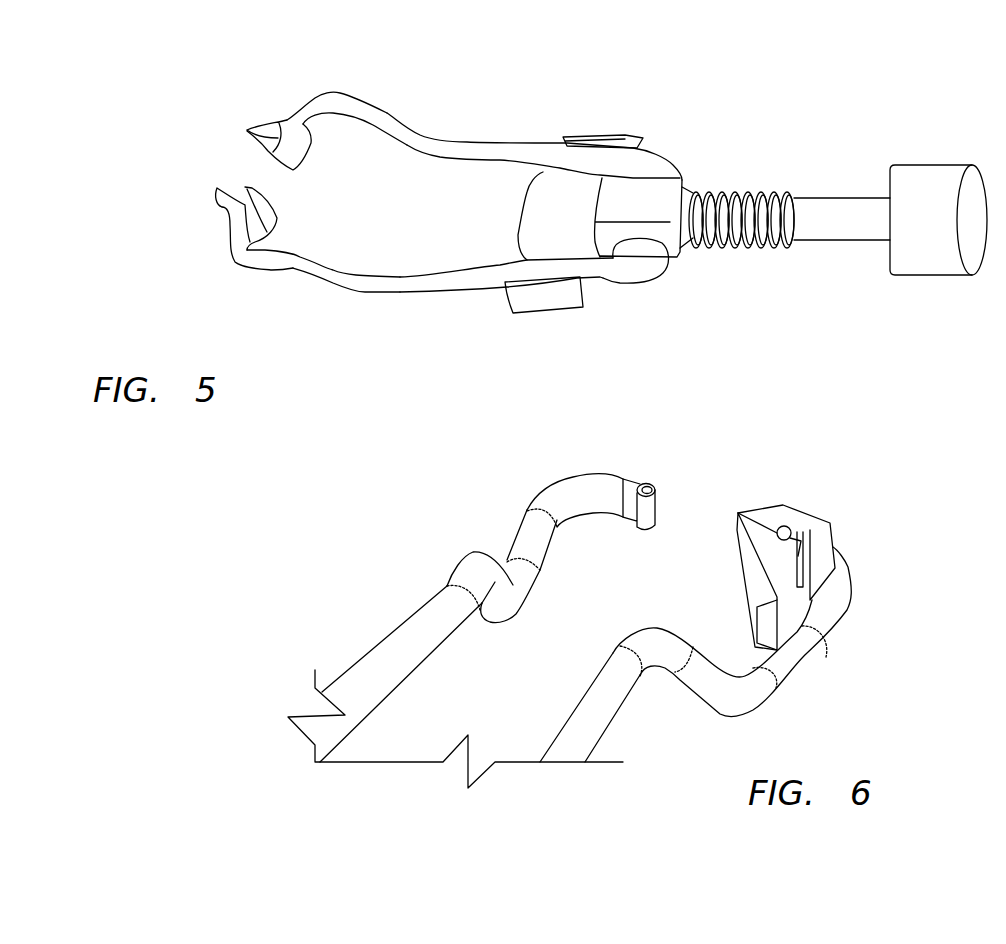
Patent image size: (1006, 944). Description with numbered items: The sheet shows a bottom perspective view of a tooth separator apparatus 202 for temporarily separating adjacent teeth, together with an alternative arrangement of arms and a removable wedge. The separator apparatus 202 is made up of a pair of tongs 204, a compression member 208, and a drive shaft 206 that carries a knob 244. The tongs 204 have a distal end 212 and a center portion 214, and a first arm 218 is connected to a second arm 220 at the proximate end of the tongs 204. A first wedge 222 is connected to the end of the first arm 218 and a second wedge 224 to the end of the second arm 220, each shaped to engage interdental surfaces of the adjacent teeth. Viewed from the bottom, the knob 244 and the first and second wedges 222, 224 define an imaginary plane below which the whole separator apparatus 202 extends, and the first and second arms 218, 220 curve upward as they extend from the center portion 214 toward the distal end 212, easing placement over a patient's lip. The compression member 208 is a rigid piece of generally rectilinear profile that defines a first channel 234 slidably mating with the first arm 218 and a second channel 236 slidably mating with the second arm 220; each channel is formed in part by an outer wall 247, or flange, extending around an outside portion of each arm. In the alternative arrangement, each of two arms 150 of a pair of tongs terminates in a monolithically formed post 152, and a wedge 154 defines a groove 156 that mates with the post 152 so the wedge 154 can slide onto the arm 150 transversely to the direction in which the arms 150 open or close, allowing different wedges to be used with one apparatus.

In FIG. 5, the separator apparatus 202 is at (479, 125).
In FIG. 5, the tongs 204 is at (463, 285).
In FIG. 5, the drive shaft 206 is at (837, 203).
In FIG. 5, the compression member 208 is at (543, 212).
In FIG. 5, the distal end 212 is at (323, 100).
In FIG. 5, the center portion 214 is at (370, 287).
In FIG. 5, the first arm 218 is at (393, 288).
In FIG. 5, the second arm 220 is at (417, 140).
In FIG. 5, the first wedge 222 is at (222, 207).
In FIG. 5, the second wedge 224 is at (247, 130).
In FIG. 5, the first channel 234 is at (588, 278).
In FIG. 5, the second channel 236 is at (563, 137).
In FIG. 5, the knob 244 is at (925, 183).
In FIG. 5, the outer wall 247 is at (630, 136).
In FIG. 6, the arm 150 is at (400, 640).
In FIG. 6, the post 152 is at (647, 484).
In FIG. 6, the wedge 154 is at (820, 537).
In FIG. 6, the groove 156 is at (784, 526).